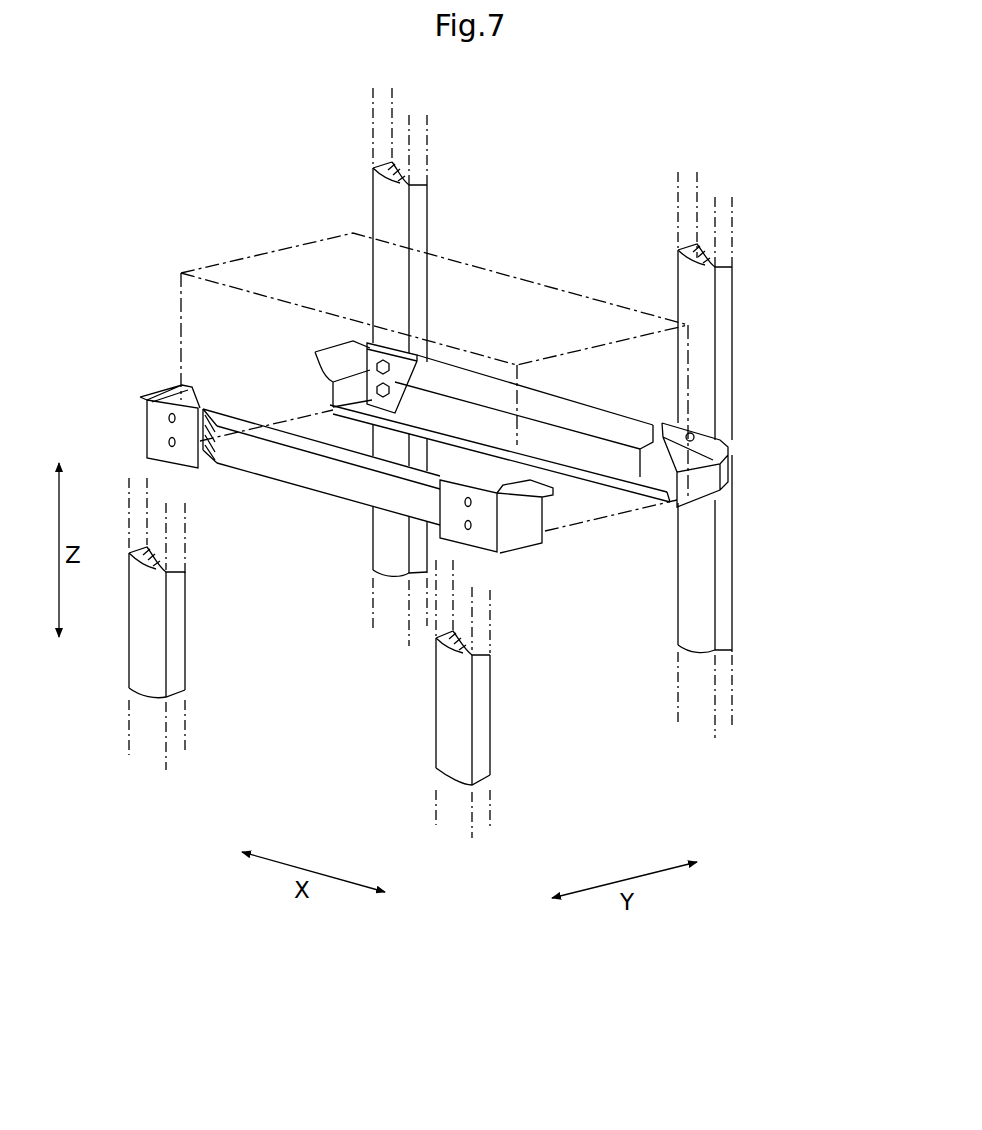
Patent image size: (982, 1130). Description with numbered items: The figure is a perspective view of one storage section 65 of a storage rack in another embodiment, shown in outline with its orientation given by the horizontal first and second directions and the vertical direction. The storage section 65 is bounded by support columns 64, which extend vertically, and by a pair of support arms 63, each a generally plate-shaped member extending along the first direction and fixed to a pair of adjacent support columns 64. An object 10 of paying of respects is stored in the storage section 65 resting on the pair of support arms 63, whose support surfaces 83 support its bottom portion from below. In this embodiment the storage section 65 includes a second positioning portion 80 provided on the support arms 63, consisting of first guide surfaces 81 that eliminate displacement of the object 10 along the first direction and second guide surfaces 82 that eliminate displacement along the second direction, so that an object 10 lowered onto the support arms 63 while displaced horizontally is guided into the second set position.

The object of paying of respects 10 is at (492, 267).
The storage section 65 is at (323, 260).
The support column 64 is at (445, 720).
The support arm 63 is at (277, 487).
The second positioning portion 80 is at (436, 459).
The first guide surface 81 is at (172, 392).
The second guide surface 82 is at (293, 428).
The support surface 83 is at (438, 428).